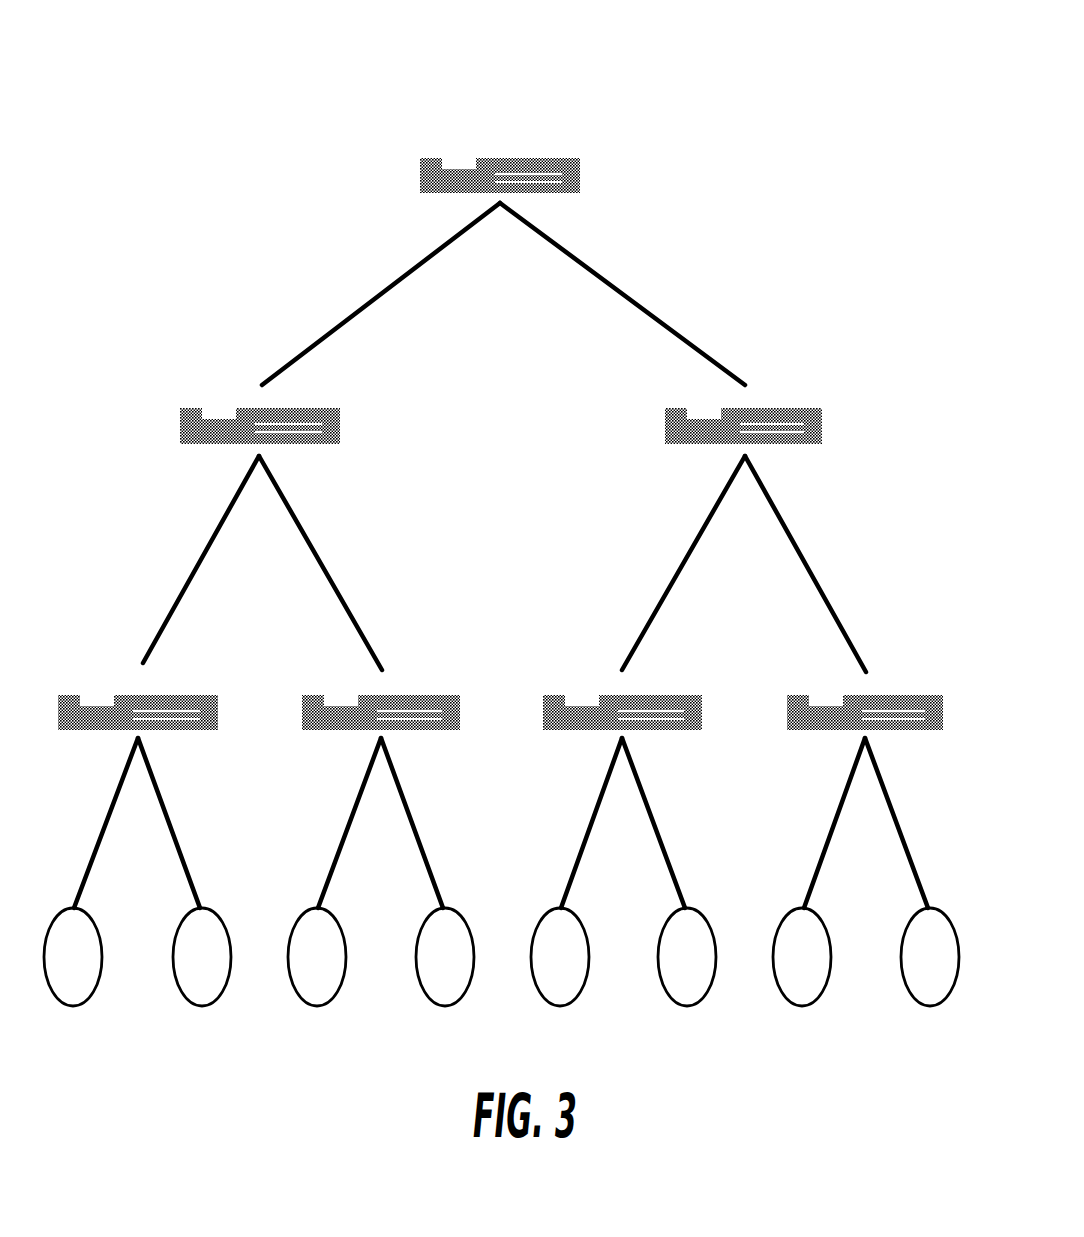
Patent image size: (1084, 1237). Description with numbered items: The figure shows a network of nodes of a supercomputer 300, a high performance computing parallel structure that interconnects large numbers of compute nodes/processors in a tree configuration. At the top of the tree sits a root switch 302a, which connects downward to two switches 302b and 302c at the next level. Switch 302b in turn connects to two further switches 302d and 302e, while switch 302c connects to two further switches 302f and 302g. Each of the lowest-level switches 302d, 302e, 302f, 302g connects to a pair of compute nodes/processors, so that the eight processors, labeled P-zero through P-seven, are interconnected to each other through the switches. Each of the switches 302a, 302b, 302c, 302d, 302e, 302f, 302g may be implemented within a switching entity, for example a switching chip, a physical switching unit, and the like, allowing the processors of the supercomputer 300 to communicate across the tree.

The supercomputer 300 is at (523, 34).
The switch 302a is at (500, 140).
The switch 302b is at (260, 397).
The switch 302c is at (743, 397).
The switch 302d is at (138, 682).
The switch 302e is at (381, 684).
The switch 302f is at (622, 683).
The switch 302g is at (865, 684).